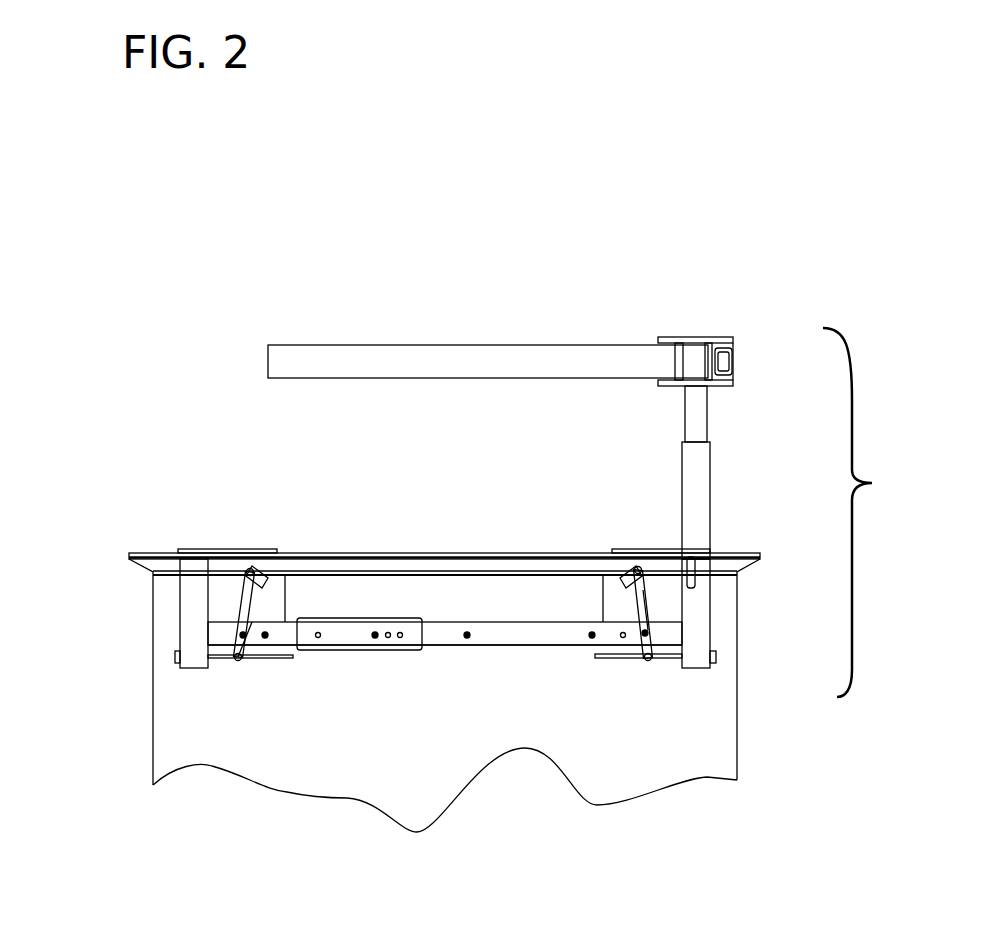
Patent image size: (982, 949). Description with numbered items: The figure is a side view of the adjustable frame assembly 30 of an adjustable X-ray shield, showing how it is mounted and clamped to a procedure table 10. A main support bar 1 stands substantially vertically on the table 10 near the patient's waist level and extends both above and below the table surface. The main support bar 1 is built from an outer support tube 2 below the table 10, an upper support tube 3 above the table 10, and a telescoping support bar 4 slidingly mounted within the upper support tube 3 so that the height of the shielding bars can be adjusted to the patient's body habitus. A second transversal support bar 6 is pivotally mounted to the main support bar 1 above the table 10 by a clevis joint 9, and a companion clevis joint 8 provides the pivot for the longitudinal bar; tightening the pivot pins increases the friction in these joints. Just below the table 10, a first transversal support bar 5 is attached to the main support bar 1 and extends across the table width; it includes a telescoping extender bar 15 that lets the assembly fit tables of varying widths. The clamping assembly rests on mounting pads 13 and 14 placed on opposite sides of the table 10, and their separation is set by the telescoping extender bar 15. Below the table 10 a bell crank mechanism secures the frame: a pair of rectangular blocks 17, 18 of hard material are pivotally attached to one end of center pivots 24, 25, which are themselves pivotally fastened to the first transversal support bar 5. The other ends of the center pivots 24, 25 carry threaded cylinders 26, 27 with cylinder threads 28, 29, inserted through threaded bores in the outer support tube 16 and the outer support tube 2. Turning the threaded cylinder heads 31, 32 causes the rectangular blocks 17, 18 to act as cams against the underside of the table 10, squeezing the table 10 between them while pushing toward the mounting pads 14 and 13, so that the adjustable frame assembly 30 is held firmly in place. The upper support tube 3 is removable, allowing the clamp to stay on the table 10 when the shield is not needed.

The main support bar 1 is at (857, 512).
The outer support tube 2 is at (712, 610).
The upper support tube 3 is at (712, 500).
The telescoping support bar 4 is at (710, 408).
The first transversal support bar 5 is at (520, 650).
The second transversal support bar 6 is at (461, 343).
The clevis joint 8 is at (720, 345).
The clevis joint 9 is at (668, 337).
The table 10 is at (462, 552).
The mounting pad 13 is at (662, 550).
The mounting pad 14 is at (224, 550).
The telescoping extender bar 15 is at (380, 650).
The outer support tube 16 is at (170, 613).
The rectangular block 17 is at (263, 580).
The rectangular block 18 is at (626, 578).
The center pivot 24 is at (250, 622).
The center pivot 25 is at (645, 608).
The threaded cylinder 26 is at (243, 660).
The threaded cylinder 27 is at (612, 660).
The cylinder thread 28 is at (224, 660).
The cylinder thread 29 is at (668, 660).
The adjustable frame assembly 30 is at (58, 353).
The threaded cylinder head 31 is at (167, 660).
The threaded cylinder head 32 is at (720, 657).